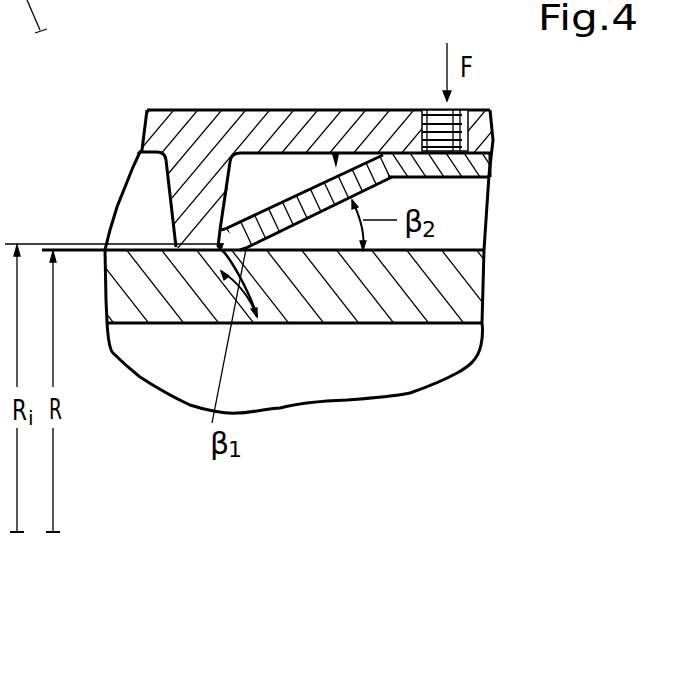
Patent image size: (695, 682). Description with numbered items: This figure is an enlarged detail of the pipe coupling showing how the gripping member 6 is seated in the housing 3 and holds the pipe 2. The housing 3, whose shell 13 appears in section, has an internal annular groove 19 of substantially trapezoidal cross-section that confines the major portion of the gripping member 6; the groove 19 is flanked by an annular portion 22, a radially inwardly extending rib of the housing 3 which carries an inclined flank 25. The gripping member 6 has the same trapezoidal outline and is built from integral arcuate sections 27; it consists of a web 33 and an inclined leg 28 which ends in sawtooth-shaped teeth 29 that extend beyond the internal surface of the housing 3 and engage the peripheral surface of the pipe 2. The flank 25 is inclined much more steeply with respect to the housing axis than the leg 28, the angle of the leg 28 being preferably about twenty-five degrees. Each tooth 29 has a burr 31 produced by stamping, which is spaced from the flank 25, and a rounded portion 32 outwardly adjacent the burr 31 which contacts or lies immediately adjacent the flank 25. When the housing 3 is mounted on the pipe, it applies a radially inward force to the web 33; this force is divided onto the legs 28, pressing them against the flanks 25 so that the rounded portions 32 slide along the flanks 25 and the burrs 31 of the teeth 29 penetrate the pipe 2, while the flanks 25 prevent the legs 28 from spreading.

The pipe 2 is at (458, 283).
The housing 3 is at (130, 117).
The gripping member 6 is at (336, 158).
The shell 13 is at (164, 104).
The internal annular groove 19 is at (293, 173).
The annular portion 22 is at (193, 183).
The flank 25 is at (232, 190).
The arcuate section 27 is at (499, 162).
The leg 28 is at (320, 200).
The teeth 29 is at (214, 245).
The burr 31 is at (226, 232).
The rounded portion 32 is at (218, 240).
The web 33 is at (470, 168).